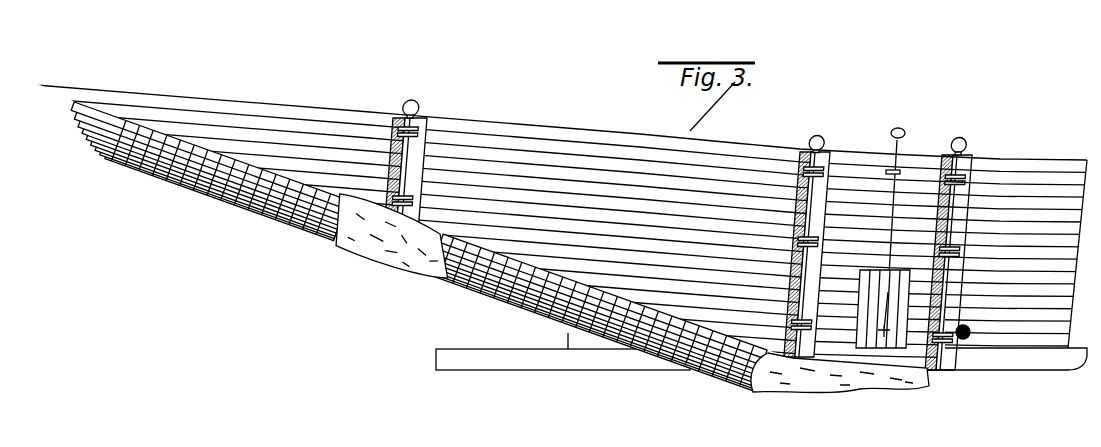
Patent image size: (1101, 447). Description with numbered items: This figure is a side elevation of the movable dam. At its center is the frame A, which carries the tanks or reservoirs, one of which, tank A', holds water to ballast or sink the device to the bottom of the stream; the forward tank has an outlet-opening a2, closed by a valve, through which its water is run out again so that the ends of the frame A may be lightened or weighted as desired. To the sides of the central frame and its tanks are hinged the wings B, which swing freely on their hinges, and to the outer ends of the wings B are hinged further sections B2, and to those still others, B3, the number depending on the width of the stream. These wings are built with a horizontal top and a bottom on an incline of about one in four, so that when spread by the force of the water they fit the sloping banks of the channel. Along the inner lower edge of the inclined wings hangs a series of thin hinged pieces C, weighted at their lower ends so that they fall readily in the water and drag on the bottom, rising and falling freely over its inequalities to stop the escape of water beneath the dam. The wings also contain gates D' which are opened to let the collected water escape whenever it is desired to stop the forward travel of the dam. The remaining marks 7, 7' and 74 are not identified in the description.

The frame of the central portion of the movable dam A is at (761, 360).
The tank or reservoir A' is at (566, 221).
The outlet-opening a2 is at (971, 331).
The wing B is at (561, 227).
The wing or section B2 is at (545, 130).
The wing or section B3 is at (265, 108).
The hinged pieces C is at (413, 246).
The gate D' is at (883, 238).
The fender bag 7 is at (392, 238).
The fender bag 7' is at (840, 378).
The ramp planks 74 is at (284, 174).